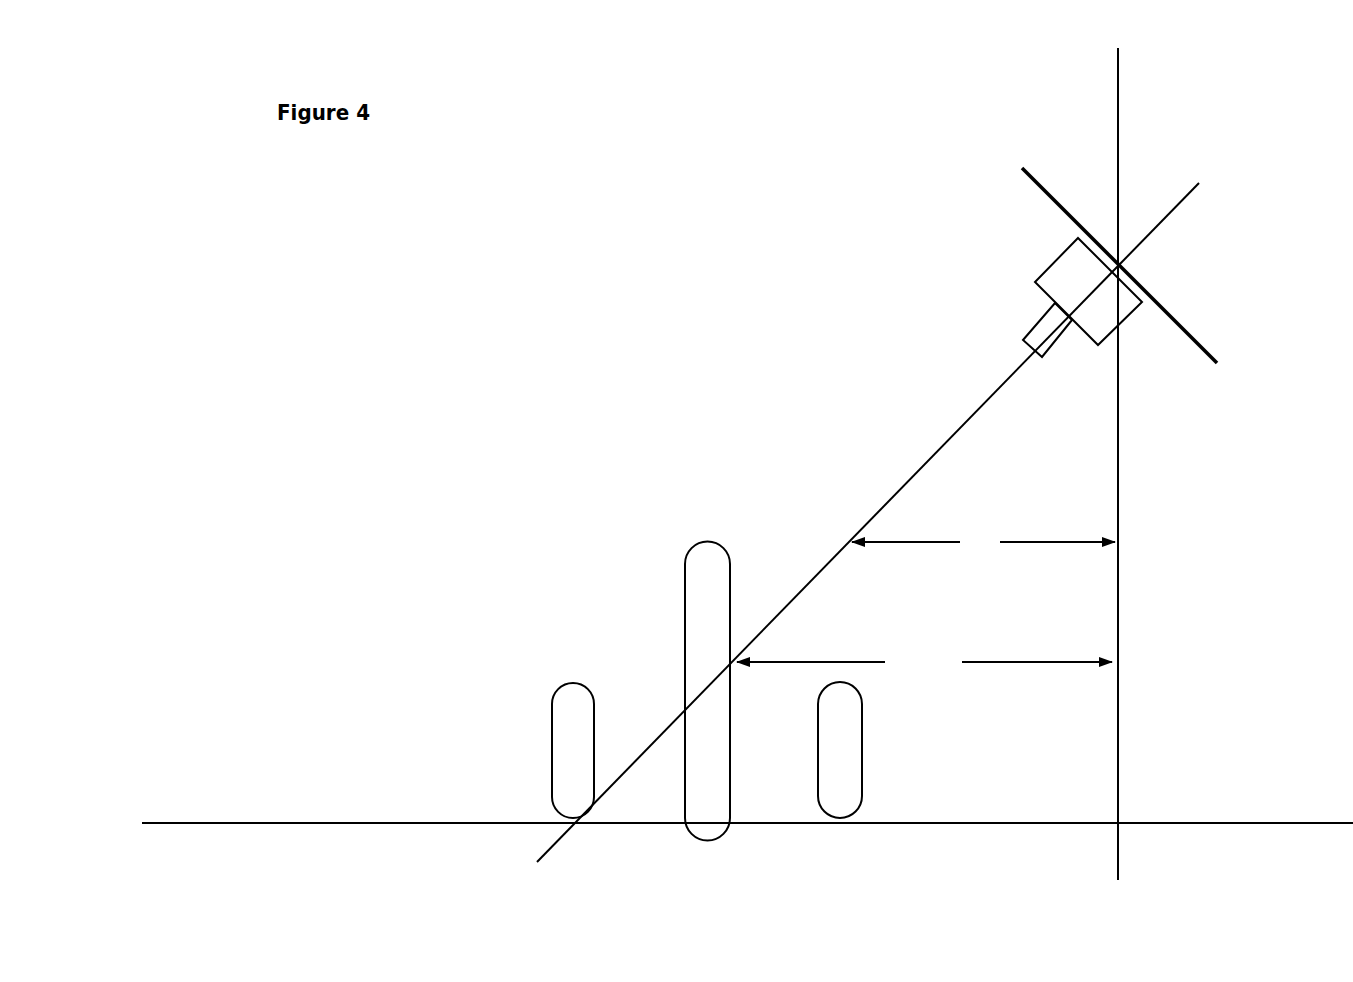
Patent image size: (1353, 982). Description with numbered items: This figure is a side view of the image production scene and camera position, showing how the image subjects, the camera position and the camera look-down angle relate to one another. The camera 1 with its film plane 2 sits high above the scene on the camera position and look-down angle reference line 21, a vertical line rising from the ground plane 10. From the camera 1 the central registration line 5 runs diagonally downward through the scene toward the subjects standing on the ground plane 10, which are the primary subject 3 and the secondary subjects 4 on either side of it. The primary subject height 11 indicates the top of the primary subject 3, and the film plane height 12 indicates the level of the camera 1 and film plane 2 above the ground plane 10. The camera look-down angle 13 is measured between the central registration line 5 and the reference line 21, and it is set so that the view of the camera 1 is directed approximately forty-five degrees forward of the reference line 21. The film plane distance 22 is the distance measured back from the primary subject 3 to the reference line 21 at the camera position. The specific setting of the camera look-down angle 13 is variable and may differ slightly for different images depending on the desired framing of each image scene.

The camera 1 is at (1020, 282).
The film plane 2 is at (1062, 217).
The primary subject 3 is at (633, 679).
The secondary subjects 4 is at (542, 767).
The central registration line 5 is at (885, 490).
The ground plane 10 is at (300, 822).
The primary subject height 11 is at (680, 543).
The film plane height 12 is at (1128, 267).
The camera look-down angle 13 is at (983, 531).
The camera position and look-down angle reference line 21 is at (1128, 489).
The film plane distance 22 is at (924, 657).